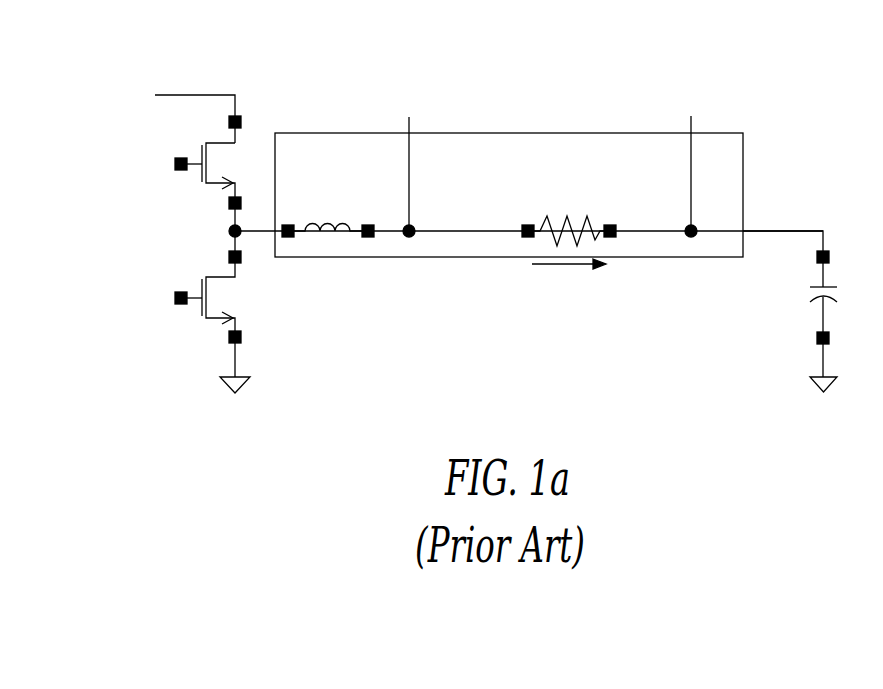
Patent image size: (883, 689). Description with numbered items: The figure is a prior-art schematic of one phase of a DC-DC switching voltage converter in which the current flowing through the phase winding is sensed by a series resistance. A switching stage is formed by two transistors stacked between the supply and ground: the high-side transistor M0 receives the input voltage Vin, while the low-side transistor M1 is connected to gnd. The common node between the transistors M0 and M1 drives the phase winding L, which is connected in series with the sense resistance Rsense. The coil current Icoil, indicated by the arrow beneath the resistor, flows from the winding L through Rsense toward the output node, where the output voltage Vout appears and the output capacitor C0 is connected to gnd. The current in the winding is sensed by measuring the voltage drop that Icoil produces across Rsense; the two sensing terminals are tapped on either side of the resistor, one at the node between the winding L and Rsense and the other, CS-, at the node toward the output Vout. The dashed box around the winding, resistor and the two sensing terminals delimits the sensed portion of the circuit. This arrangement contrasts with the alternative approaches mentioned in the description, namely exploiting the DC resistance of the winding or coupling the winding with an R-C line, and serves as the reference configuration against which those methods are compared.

The input voltage Vin is at (197, 107).
The high-side switching transistor M0 is at (218, 178).
The low-side switching transistor M1 is at (218, 304).
The ground gnd is at (540, 374).
The phase winding L is at (328, 216).
The negative sensing terminal CS- is at (686, 162).
The sense resistance Rsense is at (569, 217).
The coil current Icoil is at (569, 276).
The output voltage Vout is at (783, 219).
The output capacitor C0 is at (832, 314).